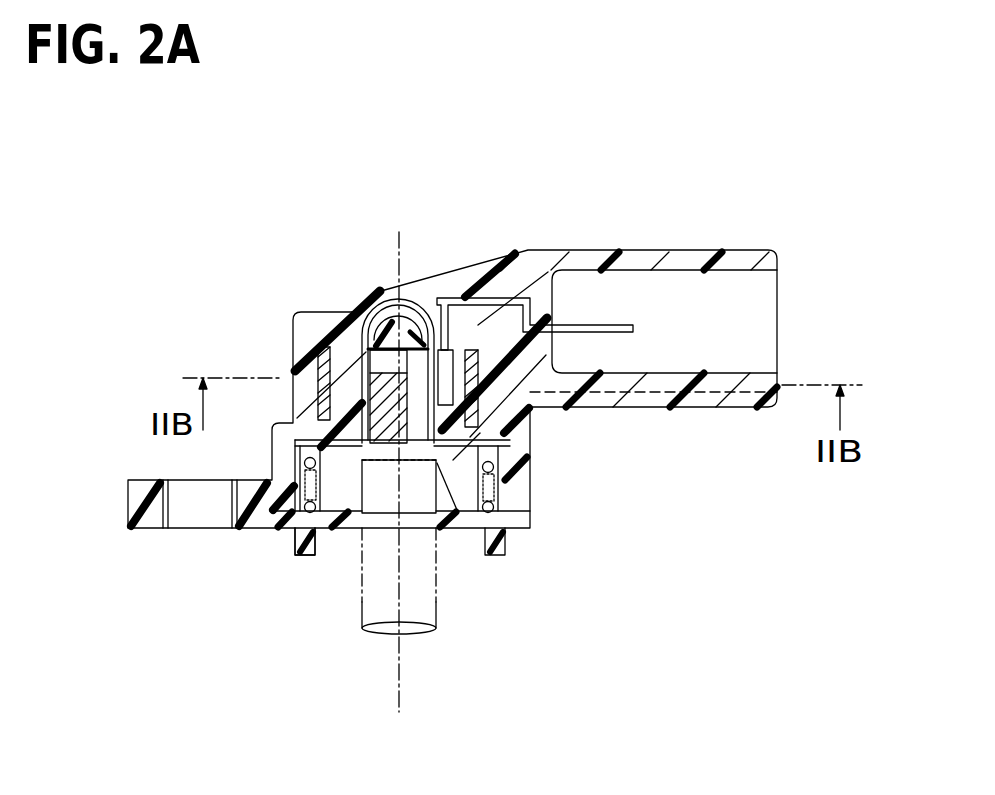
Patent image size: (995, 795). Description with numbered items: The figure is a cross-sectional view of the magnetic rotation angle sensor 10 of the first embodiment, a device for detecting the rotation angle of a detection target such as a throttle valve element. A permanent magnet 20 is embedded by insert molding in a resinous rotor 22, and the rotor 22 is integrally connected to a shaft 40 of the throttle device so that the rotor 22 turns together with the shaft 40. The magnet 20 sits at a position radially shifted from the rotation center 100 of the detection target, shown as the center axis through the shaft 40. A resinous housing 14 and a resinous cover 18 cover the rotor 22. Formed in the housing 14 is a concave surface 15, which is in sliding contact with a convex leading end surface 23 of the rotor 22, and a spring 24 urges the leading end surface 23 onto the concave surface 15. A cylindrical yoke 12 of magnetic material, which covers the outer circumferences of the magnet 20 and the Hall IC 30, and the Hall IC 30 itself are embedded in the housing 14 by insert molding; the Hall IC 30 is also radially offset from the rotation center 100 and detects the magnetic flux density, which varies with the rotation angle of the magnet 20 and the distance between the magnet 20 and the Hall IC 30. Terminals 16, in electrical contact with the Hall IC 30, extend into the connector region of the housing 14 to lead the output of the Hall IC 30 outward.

The magnetic rotation angle sensor 10 is at (335, 272).
The yoke 12 is at (317, 368).
The resinous housing 14 is at (513, 280).
The concave surface 15 is at (425, 305).
The terminals 16 is at (577, 327).
The resinous cover 18 is at (303, 538).
The magnet 20 is at (387, 305).
The resinous rotor 22 is at (297, 443).
The convex leading end surface 23 is at (372, 292).
The spring 24 is at (492, 478).
The Hall IC 30 is at (447, 390).
The shaft 40 is at (436, 607).
The rotation center 100 is at (401, 687).